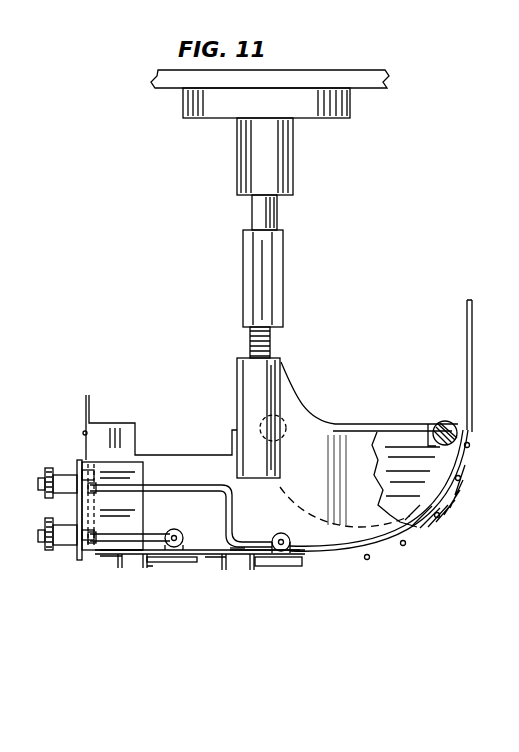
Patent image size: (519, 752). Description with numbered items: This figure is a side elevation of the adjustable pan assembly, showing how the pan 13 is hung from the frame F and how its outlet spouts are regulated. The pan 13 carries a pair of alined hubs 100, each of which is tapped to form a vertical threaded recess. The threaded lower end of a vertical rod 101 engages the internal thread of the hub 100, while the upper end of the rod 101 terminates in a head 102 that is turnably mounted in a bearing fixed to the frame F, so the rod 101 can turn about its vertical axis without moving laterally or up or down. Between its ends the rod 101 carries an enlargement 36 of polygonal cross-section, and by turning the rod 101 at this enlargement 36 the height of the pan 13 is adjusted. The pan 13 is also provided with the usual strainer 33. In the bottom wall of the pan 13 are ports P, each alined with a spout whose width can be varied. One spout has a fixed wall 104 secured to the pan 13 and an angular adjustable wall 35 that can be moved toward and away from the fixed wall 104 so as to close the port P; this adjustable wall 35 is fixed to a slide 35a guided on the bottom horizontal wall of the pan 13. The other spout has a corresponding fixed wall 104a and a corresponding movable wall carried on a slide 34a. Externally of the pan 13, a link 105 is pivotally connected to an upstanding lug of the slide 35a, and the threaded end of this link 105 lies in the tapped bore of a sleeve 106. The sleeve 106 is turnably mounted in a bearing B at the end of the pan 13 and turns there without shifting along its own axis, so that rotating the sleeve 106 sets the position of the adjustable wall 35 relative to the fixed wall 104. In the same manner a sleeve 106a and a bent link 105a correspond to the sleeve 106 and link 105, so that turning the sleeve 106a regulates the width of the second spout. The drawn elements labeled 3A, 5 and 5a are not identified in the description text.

The frame F is at (175, 80).
The head 102 is at (293, 167).
The enlargement 36 is at (283, 268).
The vertical rod 101 is at (270, 341).
The hub 100 is at (246, 397).
The pan 13 is at (467, 408).
The strainer 33 is at (465, 465).
The bearing B is at (78, 562).
The sleeve 106a is at (60, 473).
The sleeve 106 is at (60, 548).
The bent link 105a is at (168, 488).
The link 105 is at (152, 539).
The pivot roller 3A is at (250, 563).
The port P is at (233, 549).
The fixed wall 104 is at (120, 567).
The adjustable wall 35 is at (132, 563).
The slide 35a is at (173, 562).
The fixed wall 104a is at (223, 564).
The slide 34a is at (288, 563).
The assembly 5 is at (110, 601).
The assembly 5a is at (240, 562).